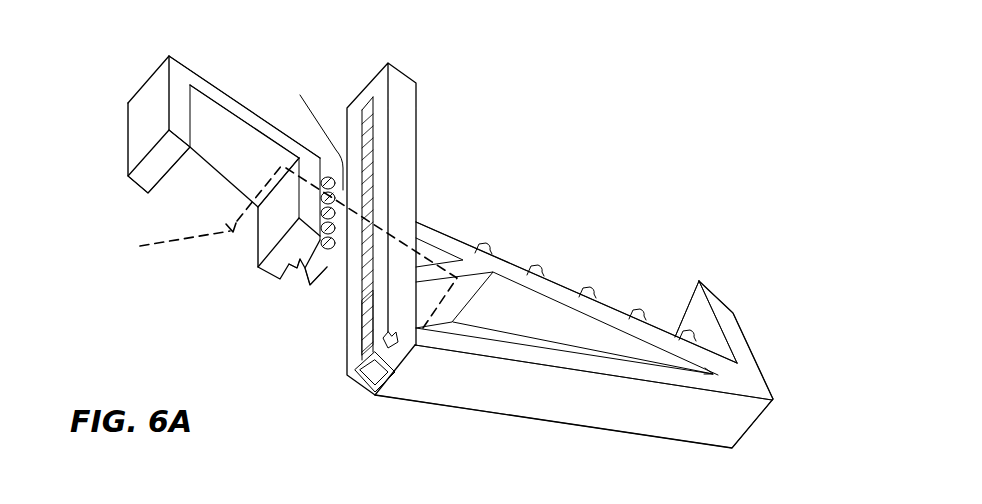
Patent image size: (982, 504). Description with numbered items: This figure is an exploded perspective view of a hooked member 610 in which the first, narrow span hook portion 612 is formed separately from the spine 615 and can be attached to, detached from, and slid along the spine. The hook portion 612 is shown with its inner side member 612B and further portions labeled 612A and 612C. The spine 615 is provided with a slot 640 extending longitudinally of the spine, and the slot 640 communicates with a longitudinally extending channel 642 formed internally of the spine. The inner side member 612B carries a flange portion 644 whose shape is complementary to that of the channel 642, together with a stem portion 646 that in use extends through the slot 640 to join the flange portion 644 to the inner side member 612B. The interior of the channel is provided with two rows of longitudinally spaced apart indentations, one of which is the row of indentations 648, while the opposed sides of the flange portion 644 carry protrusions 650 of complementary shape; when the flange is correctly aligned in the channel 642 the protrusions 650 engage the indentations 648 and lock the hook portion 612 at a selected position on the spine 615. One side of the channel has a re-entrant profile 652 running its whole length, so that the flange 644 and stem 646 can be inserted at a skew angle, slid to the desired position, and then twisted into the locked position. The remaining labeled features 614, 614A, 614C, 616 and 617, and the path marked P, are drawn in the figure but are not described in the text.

The hooked member 610 is at (629, 160).
The first hook portion 612 is at (116, 147).
The first leg of bracket 612A is at (133, 157).
The inner side member 612B is at (263, 228).
The top portion of bracket 612C is at (205, 162).
The base 614 is at (750, 329).
The end portion of base 614A is at (696, 320).
The top rail of base 614C is at (445, 237).
The spine 615 is at (403, 112).
The latch teeth 616 is at (588, 290).
The bottom slab of base 617 is at (652, 419).
The slot 640 is at (363, 122).
The channel 642 is at (382, 360).
The flange portion 644 is at (304, 273).
The stem portion 646 is at (300, 259).
The indentations 648 is at (368, 338).
The protrusions 650 is at (333, 180).
The re-entrant profile 652 is at (385, 347).
The insertion path P is at (287, 246).